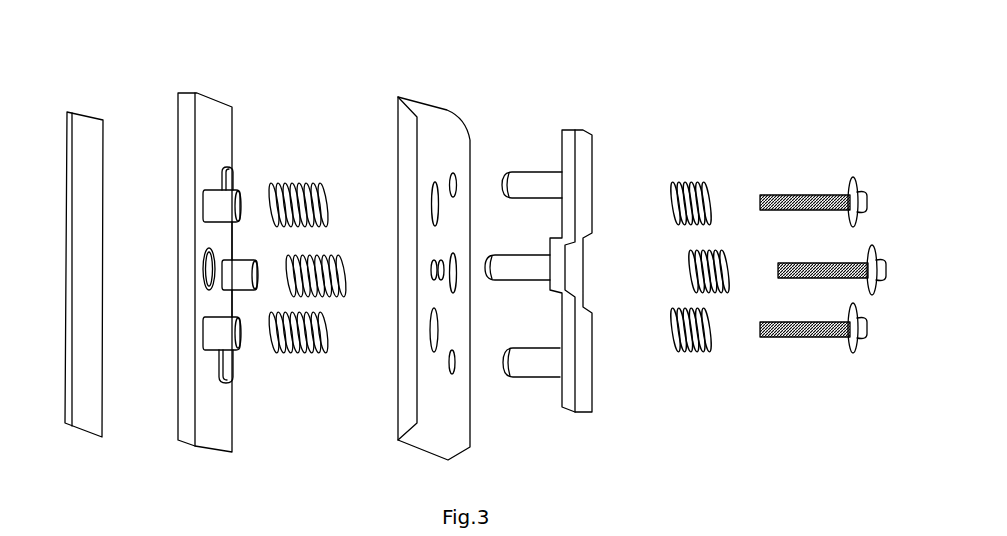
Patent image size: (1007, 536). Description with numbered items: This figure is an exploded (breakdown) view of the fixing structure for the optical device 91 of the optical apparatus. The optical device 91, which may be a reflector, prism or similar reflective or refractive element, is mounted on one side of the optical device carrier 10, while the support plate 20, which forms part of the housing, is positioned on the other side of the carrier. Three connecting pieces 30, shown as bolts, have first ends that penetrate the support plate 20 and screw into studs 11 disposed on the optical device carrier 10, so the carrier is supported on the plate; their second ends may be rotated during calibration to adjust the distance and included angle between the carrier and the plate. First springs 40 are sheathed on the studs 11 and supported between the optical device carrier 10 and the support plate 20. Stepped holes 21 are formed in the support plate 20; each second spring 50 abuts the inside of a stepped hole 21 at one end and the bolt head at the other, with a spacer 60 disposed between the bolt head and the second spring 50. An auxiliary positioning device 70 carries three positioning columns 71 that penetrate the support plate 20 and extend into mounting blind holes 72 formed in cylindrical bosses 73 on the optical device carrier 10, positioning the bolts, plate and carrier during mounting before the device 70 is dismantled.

The optical device carrier 10 is at (203, 118).
The stud 11 is at (232, 165).
The support plate 20 is at (432, 132).
The stepped hole 21 is at (451, 173).
The connecting piece 30 is at (778, 193).
The first spring 40 is at (300, 187).
The second spring 50 is at (677, 182).
The spacer 60 is at (853, 180).
The auxiliary positioning device 70 is at (585, 150).
The positioning column 71 is at (548, 360).
The mounting blind hole 72 is at (230, 360).
The boss 73 is at (232, 383).
The optical device 91 is at (75, 148).